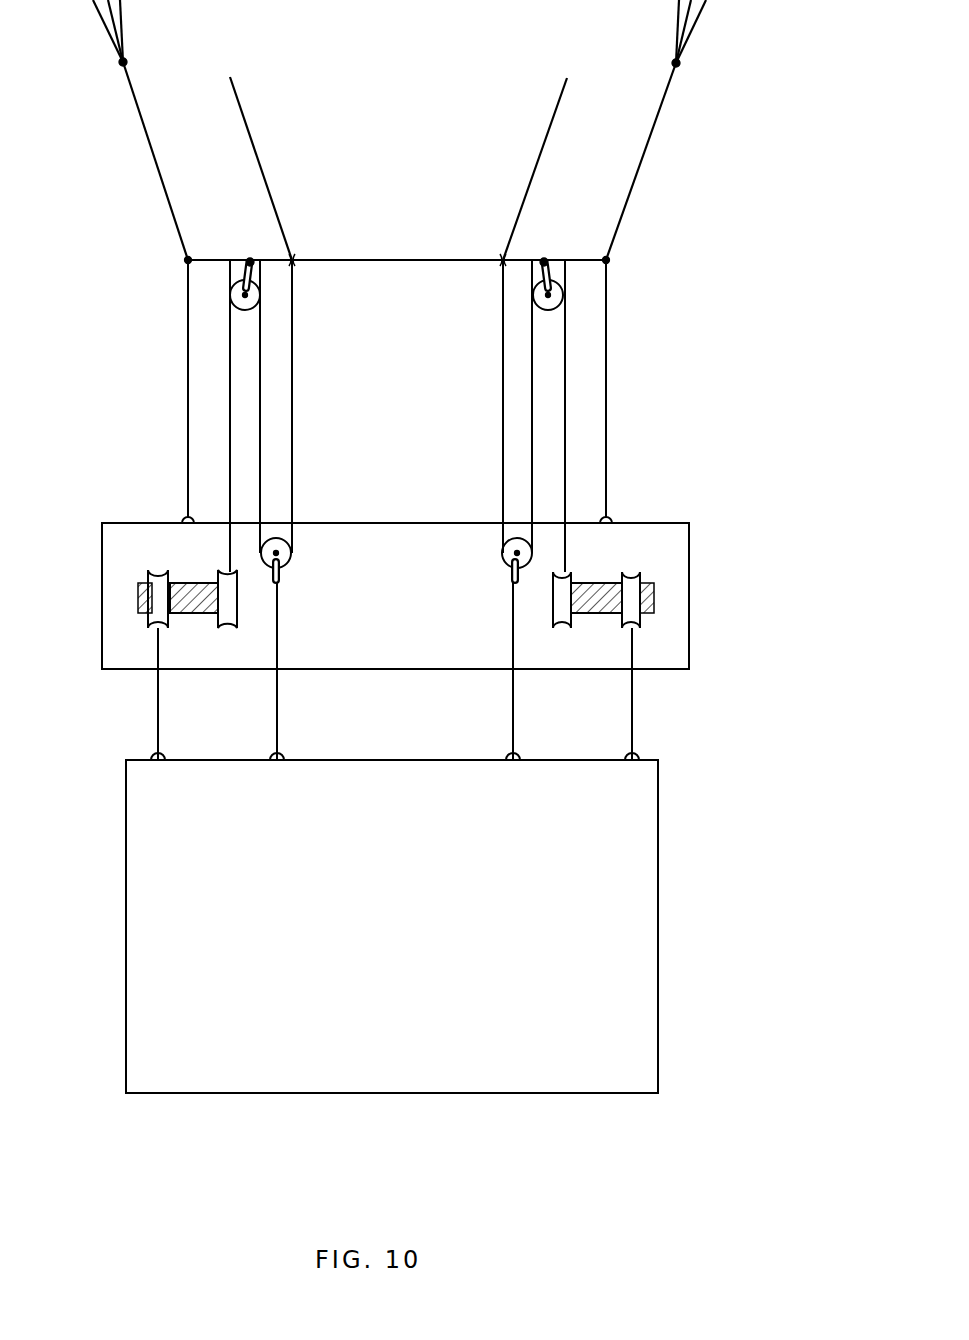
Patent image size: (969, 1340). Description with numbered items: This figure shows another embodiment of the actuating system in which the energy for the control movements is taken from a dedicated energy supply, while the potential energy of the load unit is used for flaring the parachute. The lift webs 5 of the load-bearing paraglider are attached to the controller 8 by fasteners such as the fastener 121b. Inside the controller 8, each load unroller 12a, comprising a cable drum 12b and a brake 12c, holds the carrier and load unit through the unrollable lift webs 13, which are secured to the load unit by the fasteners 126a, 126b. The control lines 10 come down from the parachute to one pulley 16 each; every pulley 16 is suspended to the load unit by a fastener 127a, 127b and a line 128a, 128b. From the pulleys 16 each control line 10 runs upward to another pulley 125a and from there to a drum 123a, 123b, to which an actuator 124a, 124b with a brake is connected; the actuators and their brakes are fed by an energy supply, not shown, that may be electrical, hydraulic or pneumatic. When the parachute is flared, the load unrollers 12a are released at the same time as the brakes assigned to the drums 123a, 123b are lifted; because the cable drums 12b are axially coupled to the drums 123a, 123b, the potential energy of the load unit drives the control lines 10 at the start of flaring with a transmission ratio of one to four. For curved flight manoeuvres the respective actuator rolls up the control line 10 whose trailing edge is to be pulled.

The parachute lines 5 is at (151, 145).
The control lines 10 is at (245, 117).
The pulley 125a is at (230, 290).
The drum 123a is at (223, 577).
The load unroller 12a is at (402, 583).
The cable drum 12b is at (145, 618).
The brake 12c is at (142, 585).
The actuator 124a is at (184, 618).
The actuator 124b is at (607, 583).
The pulley 16 is at (285, 553).
The line 128a is at (280, 645).
The line 128b is at (509, 637).
The controller 8 is at (700, 620).
The unrollable lift webs 13 is at (158, 694).
The fastener 126a is at (150, 755).
The fastener 126b is at (640, 757).
The fastener 127a is at (286, 752).
The fastener 127b is at (517, 757).
The drum 123b is at (556, 630).
The fastener 121b is at (605, 517).